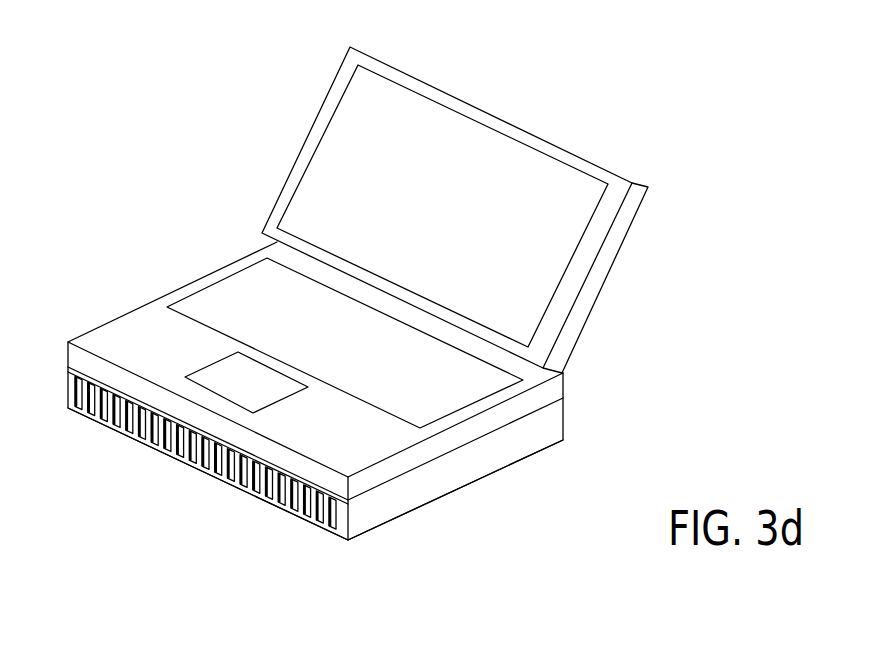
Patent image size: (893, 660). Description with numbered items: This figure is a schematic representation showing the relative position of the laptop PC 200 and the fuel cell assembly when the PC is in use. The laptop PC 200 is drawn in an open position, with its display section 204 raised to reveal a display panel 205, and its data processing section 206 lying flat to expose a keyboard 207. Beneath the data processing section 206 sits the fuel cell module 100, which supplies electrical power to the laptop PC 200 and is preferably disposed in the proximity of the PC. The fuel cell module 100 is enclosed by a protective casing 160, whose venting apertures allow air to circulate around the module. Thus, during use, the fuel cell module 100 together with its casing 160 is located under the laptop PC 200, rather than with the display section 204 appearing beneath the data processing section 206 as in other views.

The fuel cell module 100 is at (597, 416).
The casing 160 is at (472, 462).
The laptop PC 200 is at (233, 213).
The display section 204 is at (597, 260).
The display panel 205 is at (332, 147).
The data processing section 206 is at (537, 398).
The keyboard 207 is at (232, 298).